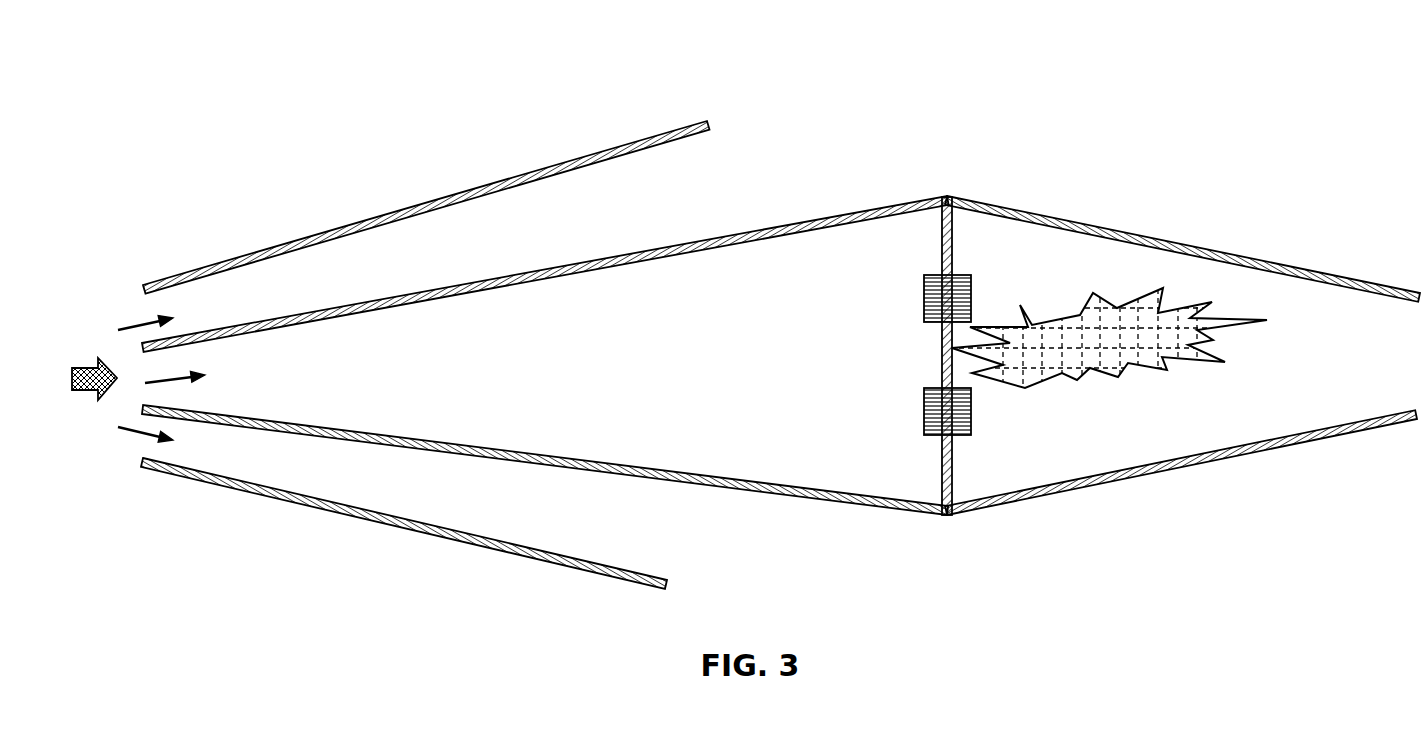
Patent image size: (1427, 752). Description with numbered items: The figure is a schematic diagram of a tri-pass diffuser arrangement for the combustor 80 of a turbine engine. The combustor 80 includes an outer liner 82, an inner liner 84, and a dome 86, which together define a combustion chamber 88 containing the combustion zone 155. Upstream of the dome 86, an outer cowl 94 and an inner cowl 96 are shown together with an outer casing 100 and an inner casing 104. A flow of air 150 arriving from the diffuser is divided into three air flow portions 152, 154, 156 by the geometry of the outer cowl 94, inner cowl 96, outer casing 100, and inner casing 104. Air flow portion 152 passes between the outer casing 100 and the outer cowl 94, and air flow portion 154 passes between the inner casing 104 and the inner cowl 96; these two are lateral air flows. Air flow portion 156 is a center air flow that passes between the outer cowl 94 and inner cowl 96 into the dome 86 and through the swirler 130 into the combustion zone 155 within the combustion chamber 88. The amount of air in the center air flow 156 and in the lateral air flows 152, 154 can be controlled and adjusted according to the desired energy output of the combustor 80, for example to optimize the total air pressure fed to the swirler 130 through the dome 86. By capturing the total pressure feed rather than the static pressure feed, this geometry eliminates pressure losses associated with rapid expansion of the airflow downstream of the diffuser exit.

The combustor 80 is at (861, 83).
The outer liner 82 is at (1180, 242).
The inner liner 84 is at (1360, 432).
The dome 86 is at (877, 452).
The combustion chamber 88 is at (1235, 417).
The outer cowl 94 is at (783, 236).
The inner cowl 96 is at (790, 486).
The outer casing 100 is at (480, 187).
The inner casing 104 is at (520, 558).
The swirler 130 is at (967, 275).
The flow of air 150 is at (85, 392).
The air flow portion 152 is at (137, 325).
The air flow portion 154 is at (137, 435).
The combustion zone 155 is at (1108, 360).
The air flow portion 156 is at (173, 375).